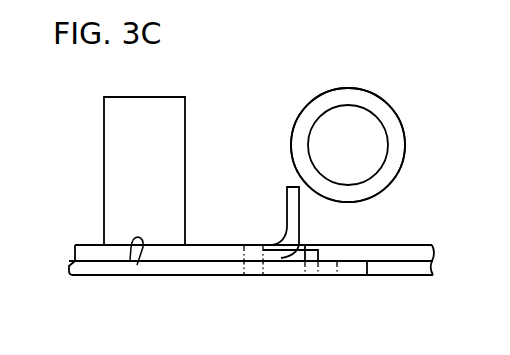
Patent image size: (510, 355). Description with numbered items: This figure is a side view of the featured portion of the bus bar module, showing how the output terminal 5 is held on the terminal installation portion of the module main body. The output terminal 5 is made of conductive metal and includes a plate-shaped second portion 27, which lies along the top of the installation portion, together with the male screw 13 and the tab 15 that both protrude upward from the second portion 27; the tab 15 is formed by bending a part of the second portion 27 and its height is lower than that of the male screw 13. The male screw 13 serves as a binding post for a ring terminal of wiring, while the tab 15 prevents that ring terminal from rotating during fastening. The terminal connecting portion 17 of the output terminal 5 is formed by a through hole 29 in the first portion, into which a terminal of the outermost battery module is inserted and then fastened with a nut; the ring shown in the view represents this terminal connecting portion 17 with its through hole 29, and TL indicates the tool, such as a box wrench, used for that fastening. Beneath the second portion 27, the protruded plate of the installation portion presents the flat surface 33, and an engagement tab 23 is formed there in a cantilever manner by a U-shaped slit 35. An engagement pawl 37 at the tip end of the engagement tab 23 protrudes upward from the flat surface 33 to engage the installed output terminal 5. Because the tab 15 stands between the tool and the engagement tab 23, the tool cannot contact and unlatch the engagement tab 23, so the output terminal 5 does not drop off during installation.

The output terminal 5 is at (94, 253).
The male screw 13 is at (112, 141).
The tab 15 is at (292, 221).
The terminal connecting portion 17 is at (375, 109).
The engagement tab 23 is at (303, 255).
The second portion 27 is at (188, 254).
The through hole 29 is at (353, 102).
The flat surface 33 is at (137, 265).
The U-shaped slit 35 is at (328, 272).
The engagement pawl 37 is at (286, 245).
The tubular lead TL is at (405, 134).